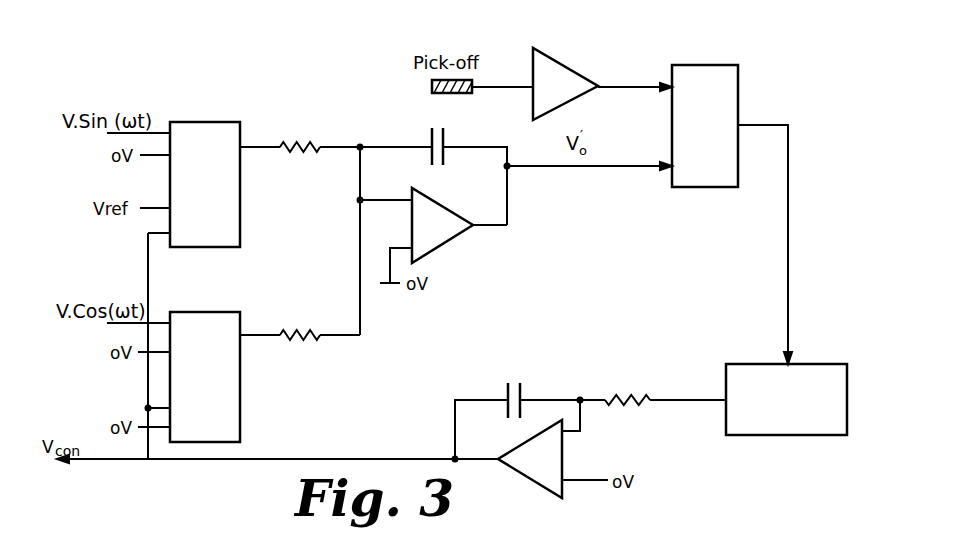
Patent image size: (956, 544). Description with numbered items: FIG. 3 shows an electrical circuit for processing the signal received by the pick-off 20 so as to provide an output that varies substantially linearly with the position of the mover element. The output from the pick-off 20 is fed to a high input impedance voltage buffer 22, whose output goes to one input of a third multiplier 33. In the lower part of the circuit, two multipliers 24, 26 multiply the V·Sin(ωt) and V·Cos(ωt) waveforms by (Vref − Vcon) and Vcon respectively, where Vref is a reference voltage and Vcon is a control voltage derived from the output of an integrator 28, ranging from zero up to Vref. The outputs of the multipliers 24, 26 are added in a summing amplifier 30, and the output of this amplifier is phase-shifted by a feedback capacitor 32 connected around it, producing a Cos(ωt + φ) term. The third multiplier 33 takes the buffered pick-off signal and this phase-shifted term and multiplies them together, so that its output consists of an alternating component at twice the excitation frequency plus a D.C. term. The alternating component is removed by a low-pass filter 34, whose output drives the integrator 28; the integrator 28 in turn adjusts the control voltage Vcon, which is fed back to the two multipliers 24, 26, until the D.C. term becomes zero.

The pick-off 20 is at (432, 85).
The high input impedance voltage buffer 22 is at (565, 80).
The multiplier 24 is at (226, 224).
The multiplier 26 is at (226, 412).
The integrator 28 is at (552, 455).
The summing amplifier 30 is at (452, 233).
The feedback capacitor 32 is at (447, 160).
The third multiplier 33 is at (726, 180).
The low-pass filter 34 is at (822, 430).